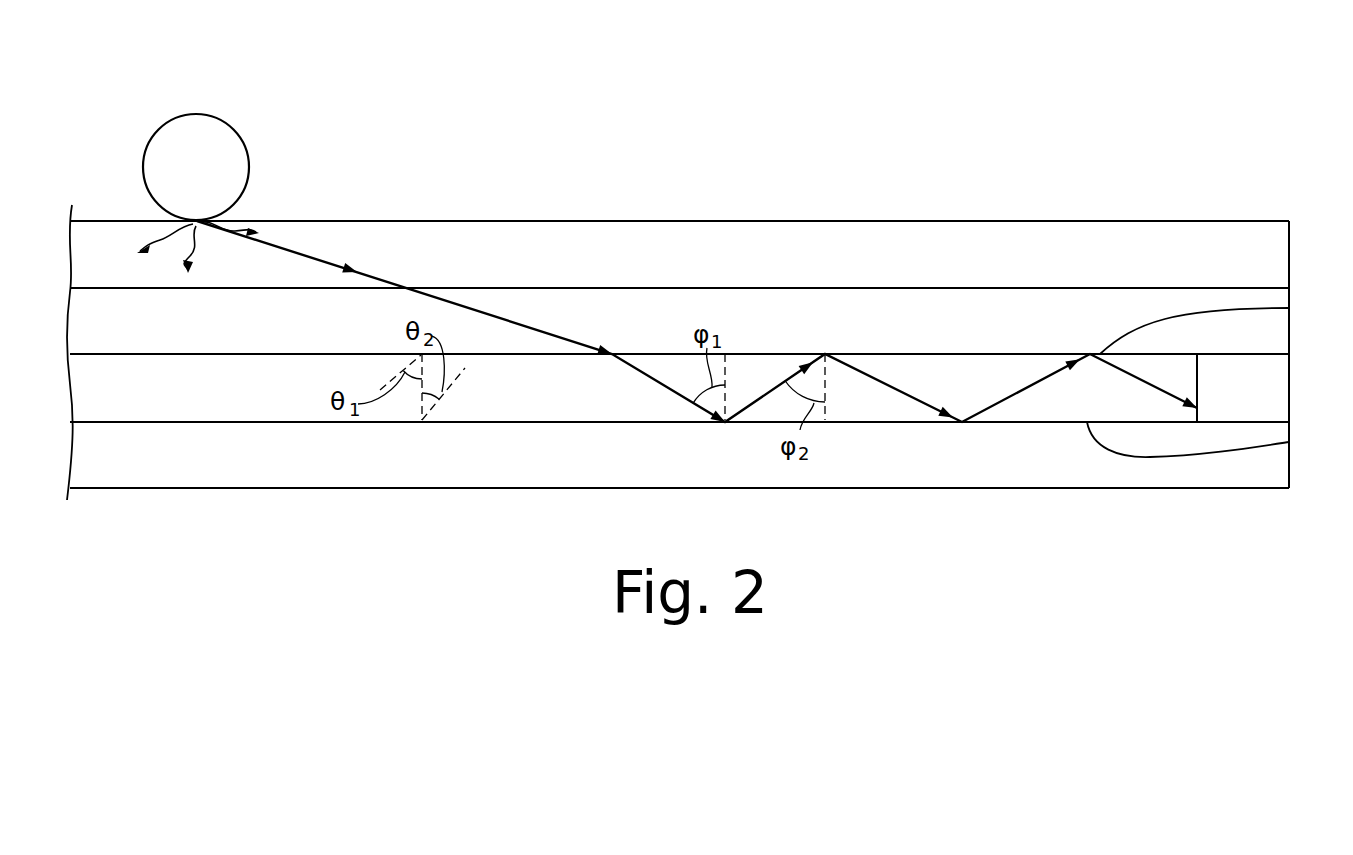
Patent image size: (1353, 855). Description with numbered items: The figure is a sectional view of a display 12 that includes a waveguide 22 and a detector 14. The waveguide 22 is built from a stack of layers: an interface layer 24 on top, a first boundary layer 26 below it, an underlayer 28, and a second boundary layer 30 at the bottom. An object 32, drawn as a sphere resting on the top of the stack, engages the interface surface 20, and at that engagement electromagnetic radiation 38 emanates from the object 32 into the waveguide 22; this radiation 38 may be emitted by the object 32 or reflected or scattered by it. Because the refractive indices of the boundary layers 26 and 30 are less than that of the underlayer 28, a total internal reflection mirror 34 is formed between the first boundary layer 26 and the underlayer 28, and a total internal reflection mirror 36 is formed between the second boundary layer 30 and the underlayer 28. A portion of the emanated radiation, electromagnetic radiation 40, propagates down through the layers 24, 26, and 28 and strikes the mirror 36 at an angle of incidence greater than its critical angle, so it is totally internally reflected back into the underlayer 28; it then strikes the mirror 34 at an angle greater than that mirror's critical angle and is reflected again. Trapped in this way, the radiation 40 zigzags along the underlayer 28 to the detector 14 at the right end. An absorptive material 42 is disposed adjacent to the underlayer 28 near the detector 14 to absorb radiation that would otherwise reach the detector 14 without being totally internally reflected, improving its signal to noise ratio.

The display 12 is at (1106, 85).
The detector 14 is at (1278, 396).
The interface surface 20 is at (862, 221).
The waveguide 22 is at (476, 172).
The interface layer 24 is at (806, 272).
The first boundary layer 26 is at (121, 343).
The underlayer 28 is at (121, 409).
The second boundary layer 30 is at (121, 474).
The object 32 is at (218, 116).
The total internal reflection mirror 34 is at (192, 354).
The total internal reflection mirror 36 is at (247, 422).
The electromagnetic radiation 38 is at (201, 232).
The electromagnetic radiation 40 is at (311, 258).
The absorptive material 42 is at (1268, 328).